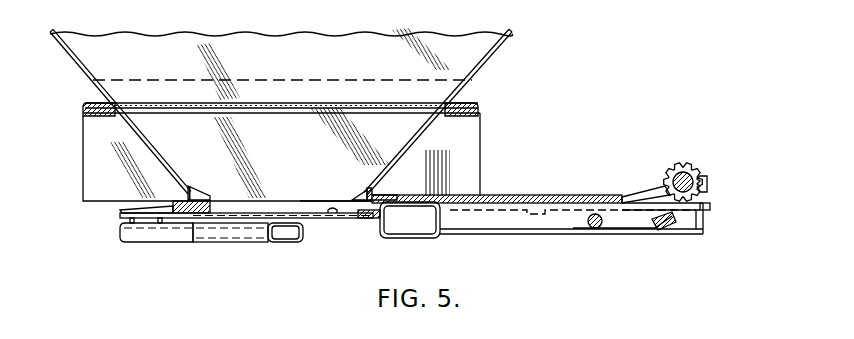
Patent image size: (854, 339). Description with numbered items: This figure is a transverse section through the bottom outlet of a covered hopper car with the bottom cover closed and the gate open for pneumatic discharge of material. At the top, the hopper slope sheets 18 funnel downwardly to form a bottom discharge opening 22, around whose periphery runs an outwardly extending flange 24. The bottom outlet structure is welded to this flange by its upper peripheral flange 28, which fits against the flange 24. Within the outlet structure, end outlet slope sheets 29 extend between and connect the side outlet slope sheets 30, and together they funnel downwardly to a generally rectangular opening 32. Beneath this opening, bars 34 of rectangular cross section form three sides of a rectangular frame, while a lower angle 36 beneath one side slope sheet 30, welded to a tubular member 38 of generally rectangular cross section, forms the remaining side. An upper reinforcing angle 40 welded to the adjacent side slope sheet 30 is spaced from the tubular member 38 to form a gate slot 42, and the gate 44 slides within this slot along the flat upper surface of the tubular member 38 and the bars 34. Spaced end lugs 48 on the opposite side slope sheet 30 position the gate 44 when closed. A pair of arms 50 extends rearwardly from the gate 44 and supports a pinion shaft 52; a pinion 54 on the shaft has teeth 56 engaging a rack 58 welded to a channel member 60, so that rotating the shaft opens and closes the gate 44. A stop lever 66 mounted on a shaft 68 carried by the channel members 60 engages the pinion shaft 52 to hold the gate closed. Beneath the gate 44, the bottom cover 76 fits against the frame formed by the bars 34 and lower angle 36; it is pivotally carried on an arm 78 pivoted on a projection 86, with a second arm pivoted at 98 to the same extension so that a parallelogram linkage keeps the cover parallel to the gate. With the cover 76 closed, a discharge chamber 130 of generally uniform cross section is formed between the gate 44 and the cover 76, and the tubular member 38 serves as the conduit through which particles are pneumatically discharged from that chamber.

The hopper slope sheet 18 is at (80, 63).
The bottom discharge opening 22 is at (297, 102).
The outwardly extending flange 24 is at (471, 107).
The upper peripheral flange 28 is at (481, 124).
The end outlet slope sheet 29 is at (278, 140).
The side outlet slope sheet 30 is at (143, 139).
The rectangular opening 32 is at (282, 212).
The bar 34 is at (215, 201).
The lower angle 36 is at (375, 226).
The tubular member 38 is at (406, 238).
The upper reinforcing angle 40 is at (395, 189).
The gate slot 42 is at (360, 195).
The gate 44 is at (518, 196).
The end lug 48 is at (198, 193).
The arm 50 is at (648, 190).
The pinion shaft 52 is at (708, 184).
The pinion 54 is at (700, 175).
The teeth 56 is at (691, 162).
The rack 58 is at (566, 209).
The channel member 60 is at (483, 232).
The stop lever 66 is at (630, 238).
The shaft 68 is at (597, 228).
The bottom cover 76 is at (331, 213).
The arm 78 is at (278, 245).
The projection 86 is at (160, 222).
The pivot 98 is at (122, 210).
The discharge chamber 130 is at (343, 200).